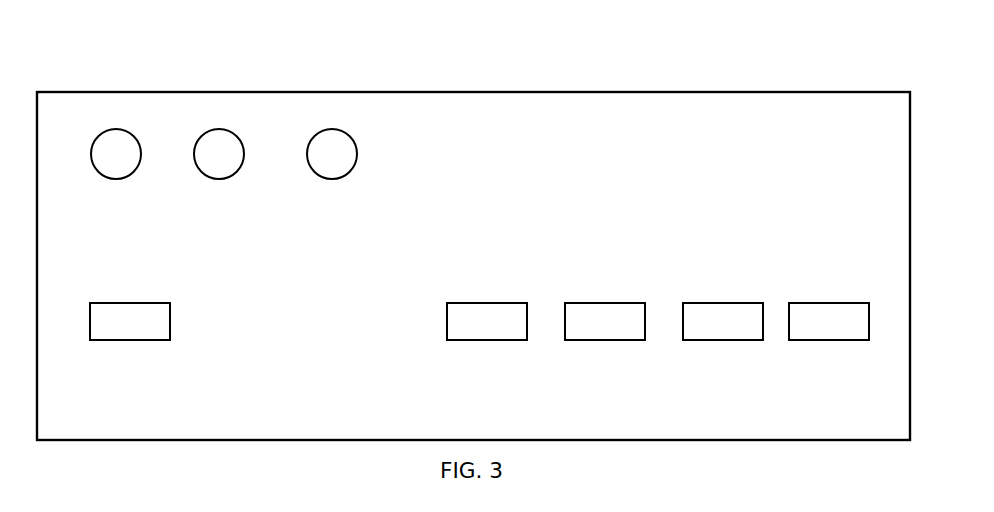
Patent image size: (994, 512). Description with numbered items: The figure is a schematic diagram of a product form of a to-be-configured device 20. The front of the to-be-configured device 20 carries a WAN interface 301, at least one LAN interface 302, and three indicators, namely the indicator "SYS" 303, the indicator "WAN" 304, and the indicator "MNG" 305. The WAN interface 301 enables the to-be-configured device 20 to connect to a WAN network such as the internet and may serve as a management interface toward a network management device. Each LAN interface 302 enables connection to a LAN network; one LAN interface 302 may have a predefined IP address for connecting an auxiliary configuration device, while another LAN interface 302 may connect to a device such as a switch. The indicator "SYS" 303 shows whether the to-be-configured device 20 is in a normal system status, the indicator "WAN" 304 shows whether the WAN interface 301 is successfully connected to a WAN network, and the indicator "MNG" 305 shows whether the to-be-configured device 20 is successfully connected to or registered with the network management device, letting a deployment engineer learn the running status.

The to-be-configured device 20 is at (581, 90).
The WAN interface 301 is at (138, 288).
The LAN interface 302 is at (657, 322).
The indicator "SYS" 303 is at (113, 171).
The indicator "WAN" 304 is at (220, 171).
The indicator "MNG" 305 is at (330, 171).